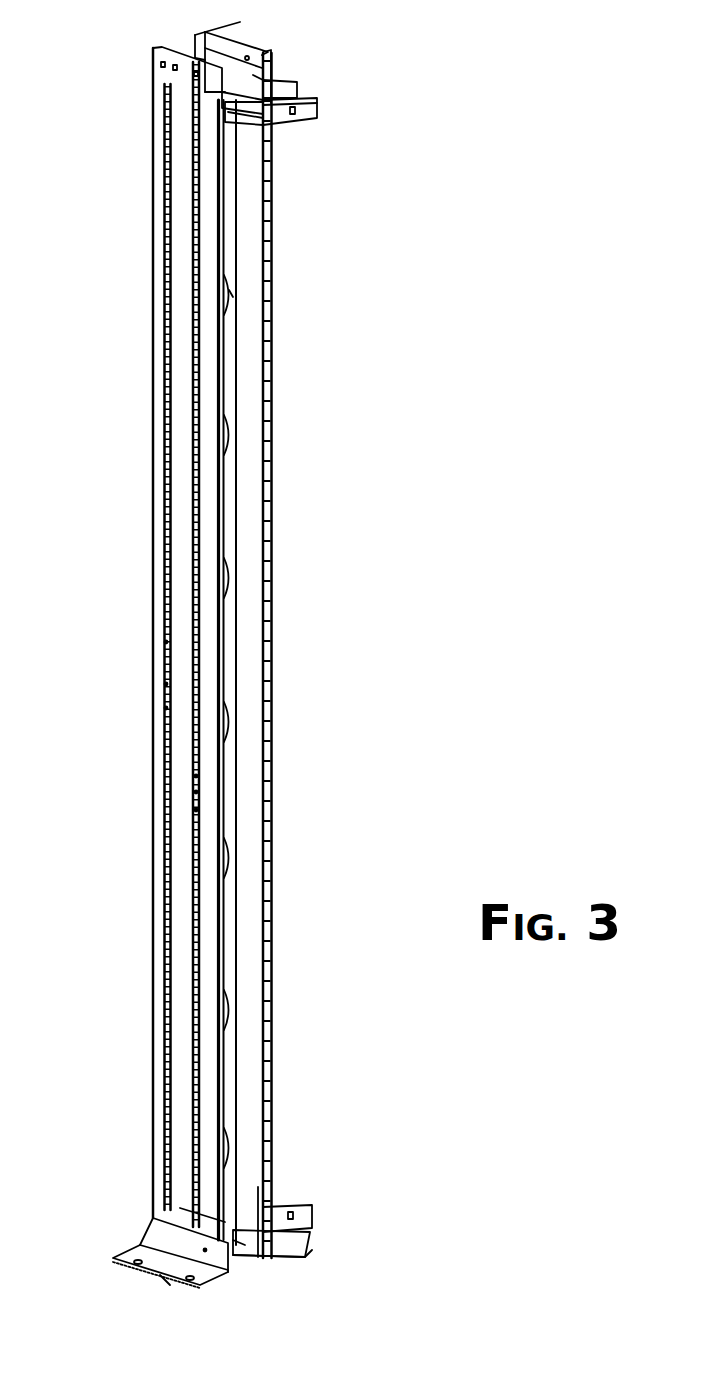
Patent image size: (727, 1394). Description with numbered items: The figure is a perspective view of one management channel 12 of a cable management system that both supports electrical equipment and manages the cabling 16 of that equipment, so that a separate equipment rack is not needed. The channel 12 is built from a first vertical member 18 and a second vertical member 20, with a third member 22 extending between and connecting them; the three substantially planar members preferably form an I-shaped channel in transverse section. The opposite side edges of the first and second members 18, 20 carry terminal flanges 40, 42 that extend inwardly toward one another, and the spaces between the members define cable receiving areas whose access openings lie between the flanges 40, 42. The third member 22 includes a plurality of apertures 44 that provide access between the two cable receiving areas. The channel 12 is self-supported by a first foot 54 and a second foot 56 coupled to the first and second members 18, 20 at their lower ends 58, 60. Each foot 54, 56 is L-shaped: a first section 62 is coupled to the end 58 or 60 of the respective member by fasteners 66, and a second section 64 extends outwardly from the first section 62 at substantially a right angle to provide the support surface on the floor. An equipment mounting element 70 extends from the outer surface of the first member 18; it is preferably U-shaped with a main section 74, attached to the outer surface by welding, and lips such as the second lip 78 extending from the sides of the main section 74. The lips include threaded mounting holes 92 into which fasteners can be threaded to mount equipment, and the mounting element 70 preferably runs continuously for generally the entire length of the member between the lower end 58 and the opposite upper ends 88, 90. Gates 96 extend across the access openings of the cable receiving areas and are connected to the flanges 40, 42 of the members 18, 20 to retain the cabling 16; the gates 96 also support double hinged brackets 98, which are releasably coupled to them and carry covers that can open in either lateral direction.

The management channel 12 is at (365, 236).
The cabling 16 is at (192, 503).
The first vertical member 18 is at (158, 64).
The second vertical member 20 is at (270, 52).
The third member 22 is at (196, 50).
The terminal flange 40 is at (228, 90).
The terminal flange 42 is at (272, 80).
The aperture 44 is at (268, 298).
The first base support or foot 54 is at (113, 1262).
The second base support or foot 56 is at (305, 1248).
The end 58 is at (160, 1220).
The end 60 is at (245, 1245).
The first section 62 is at (160, 1232).
The second section 64 is at (165, 1270).
The fastener 66 is at (163, 1235).
The first equipment mounting element 70 is at (142, 637).
The main section 74 is at (190, 466).
The second lip 78 is at (165, 560).
The opposite end 88 is at (158, 82).
The opposite end 90 is at (238, 28).
The threaded mounting hole 92 is at (165, 640).
The gate 96 is at (266, 143).
The double hinged bracket 98 is at (318, 110).